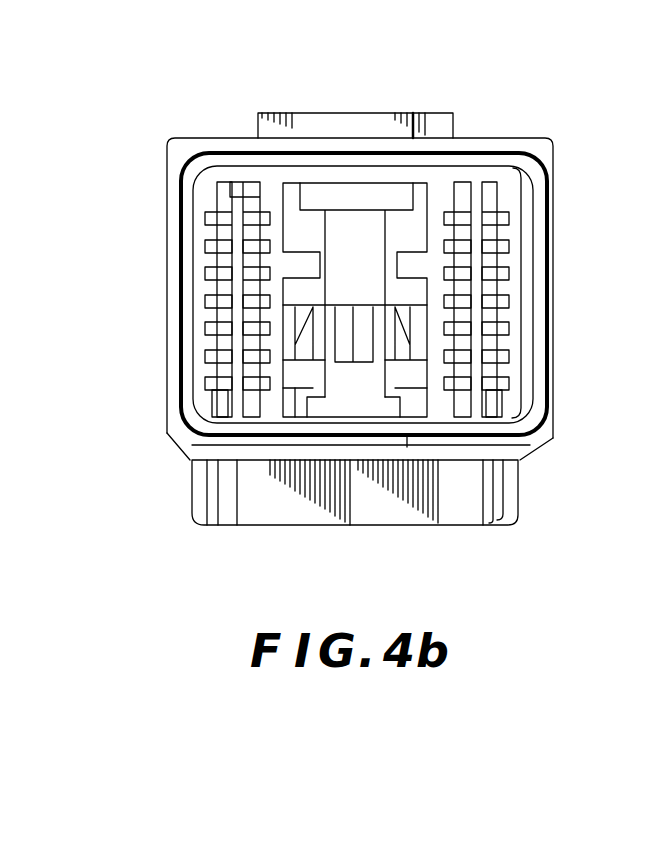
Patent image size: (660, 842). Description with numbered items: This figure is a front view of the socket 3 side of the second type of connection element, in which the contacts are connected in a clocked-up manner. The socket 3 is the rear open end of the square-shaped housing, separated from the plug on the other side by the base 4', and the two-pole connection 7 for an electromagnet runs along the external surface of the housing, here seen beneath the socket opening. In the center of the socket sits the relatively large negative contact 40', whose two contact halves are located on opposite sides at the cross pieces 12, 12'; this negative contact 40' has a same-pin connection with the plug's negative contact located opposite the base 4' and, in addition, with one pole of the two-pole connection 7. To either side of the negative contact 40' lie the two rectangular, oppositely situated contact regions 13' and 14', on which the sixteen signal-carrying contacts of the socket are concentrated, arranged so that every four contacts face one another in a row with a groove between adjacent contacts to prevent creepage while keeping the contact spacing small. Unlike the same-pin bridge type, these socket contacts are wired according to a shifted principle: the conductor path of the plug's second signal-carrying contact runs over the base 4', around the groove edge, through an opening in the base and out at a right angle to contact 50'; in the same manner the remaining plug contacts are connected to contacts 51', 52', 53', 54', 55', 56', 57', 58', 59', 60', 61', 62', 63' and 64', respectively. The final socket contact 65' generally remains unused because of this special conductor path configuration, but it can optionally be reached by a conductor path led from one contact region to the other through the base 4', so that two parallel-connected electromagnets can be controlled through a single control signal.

The socket 3 is at (340, 88).
The negative contact 40' is at (355, 245).
The signal-carrying contact 57' is at (476, 244).
The signal-carrying contact 50' is at (516, 178).
The signal-carrying contact 58' is at (219, 250).
The signal-carrying contact 65' is at (317, 282).
The signal-carrying contact 59' is at (159, 296).
The signal-carrying contact 60' is at (160, 263).
The cross piece 12 is at (180, 289).
The signal-carrying contact 61' is at (158, 341).
The signal-carrying contact 64' is at (160, 393).
The signal-carrying contact 62' is at (183, 409).
The signal-carrying contact 63' is at (170, 458).
The signal-carrying contact 56' is at (551, 288).
The signal-carrying contact 55' is at (551, 244).
The cross piece 12' is at (534, 294).
The signal-carrying contact 54' is at (550, 319).
The signal-carrying contact 51' is at (551, 370).
The signal-carrying contact 53' is at (530, 396).
The signal-carrying contact 52' is at (547, 439).
The contact region 13' is at (399, 338).
The contact region 14' is at (241, 493).
The base 4' is at (320, 491).
The two-pole connection 7 is at (347, 471).